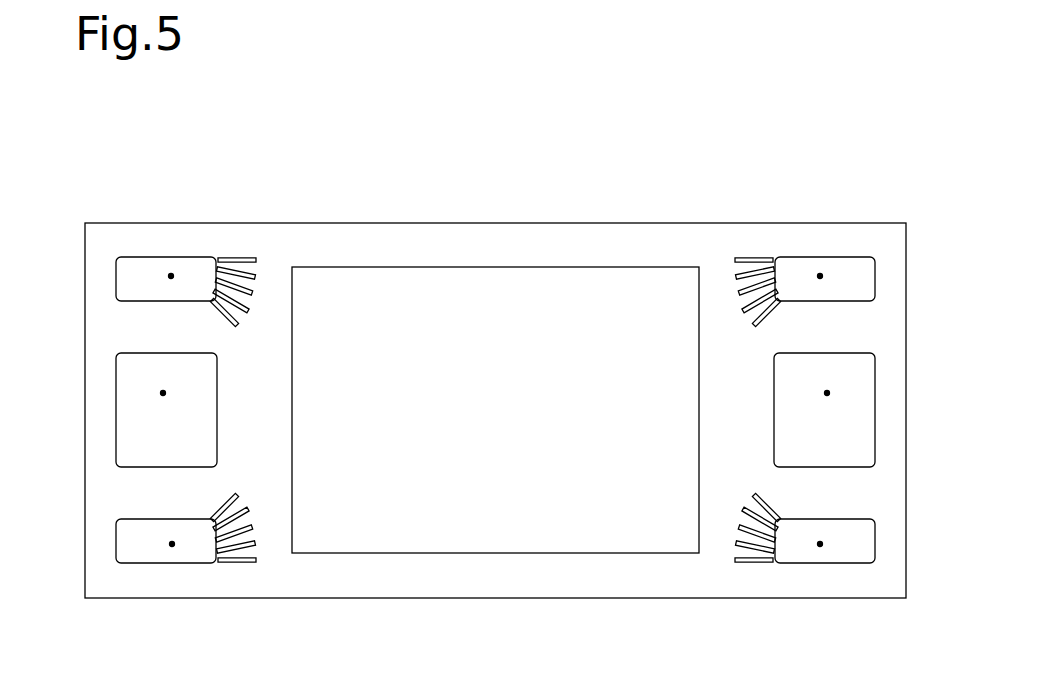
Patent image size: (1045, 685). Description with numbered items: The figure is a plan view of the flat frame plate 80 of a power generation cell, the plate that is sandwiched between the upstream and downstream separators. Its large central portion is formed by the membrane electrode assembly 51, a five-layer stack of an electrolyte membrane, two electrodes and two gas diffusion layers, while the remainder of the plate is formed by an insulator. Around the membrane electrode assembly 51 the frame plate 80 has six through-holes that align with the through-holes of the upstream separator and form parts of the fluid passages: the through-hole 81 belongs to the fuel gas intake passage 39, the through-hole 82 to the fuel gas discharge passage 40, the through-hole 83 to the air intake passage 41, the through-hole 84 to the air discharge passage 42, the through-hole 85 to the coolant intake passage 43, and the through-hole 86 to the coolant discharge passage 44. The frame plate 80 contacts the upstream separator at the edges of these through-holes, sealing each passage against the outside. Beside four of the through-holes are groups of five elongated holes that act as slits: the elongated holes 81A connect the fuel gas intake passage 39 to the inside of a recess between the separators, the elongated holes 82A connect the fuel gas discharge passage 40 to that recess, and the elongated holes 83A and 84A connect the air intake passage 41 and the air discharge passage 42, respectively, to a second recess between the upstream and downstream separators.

The frame plate 80 is at (630, 189).
The membrane electrode assembly 51 is at (465, 290).
The through-hole 81 is at (141, 262).
The fuel gas intake passage 39 is at (171, 276).
The elongated holes 81A is at (253, 271).
The through-hole 83 is at (850, 262).
The air intake passage 41 is at (820, 276).
The elongated holes 83A is at (738, 271).
The through-hole 85 is at (118, 432).
The coolant intake passage 43 is at (163, 393).
The through-hole 86 is at (873, 432).
The coolant discharge passage 44 is at (827, 393).
The through-hole 84 is at (141, 558).
The air discharge passage 42 is at (172, 544).
The elongated holes 84A is at (255, 549).
The through-hole 82 is at (850, 558).
The fuel gas discharge passage 40 is at (820, 544).
The elongated holes 82A is at (738, 549).